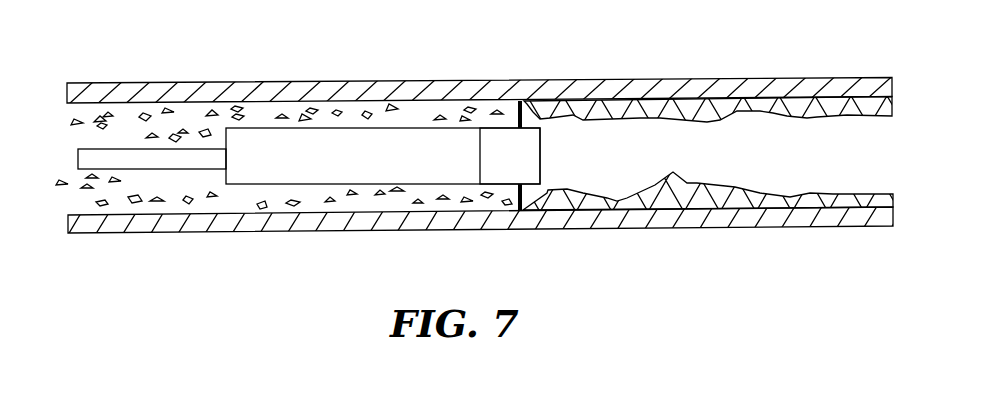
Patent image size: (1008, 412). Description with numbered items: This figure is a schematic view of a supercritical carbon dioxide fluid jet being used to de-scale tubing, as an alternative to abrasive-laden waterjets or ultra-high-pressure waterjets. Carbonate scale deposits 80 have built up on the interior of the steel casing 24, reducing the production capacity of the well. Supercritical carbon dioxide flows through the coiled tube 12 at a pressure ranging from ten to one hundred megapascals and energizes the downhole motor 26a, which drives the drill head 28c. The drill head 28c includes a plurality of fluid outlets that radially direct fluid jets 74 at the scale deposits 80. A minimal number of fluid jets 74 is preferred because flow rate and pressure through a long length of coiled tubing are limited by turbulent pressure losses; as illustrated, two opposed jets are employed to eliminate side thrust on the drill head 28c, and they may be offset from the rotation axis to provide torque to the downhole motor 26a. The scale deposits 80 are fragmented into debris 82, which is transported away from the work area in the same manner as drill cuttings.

The coiled tube 12 is at (150, 154).
The steel casing 24 is at (695, 78).
The downhole motor 26a is at (313, 167).
The drill head 28c is at (487, 159).
The fluid jets 74 is at (523, 106).
The scale deposits 80 is at (792, 116).
The debris 82 is at (241, 109).